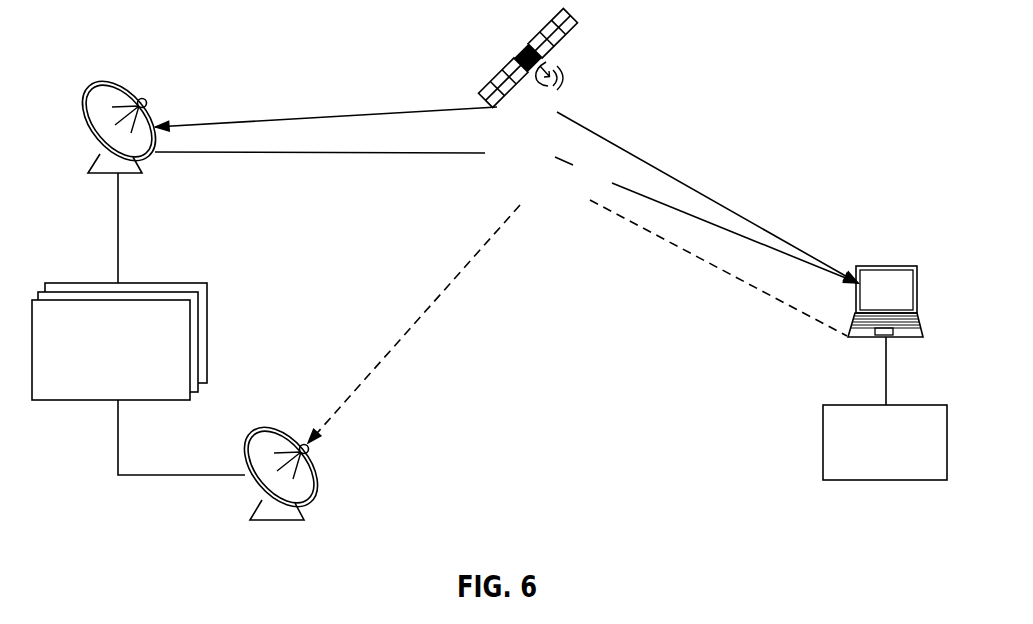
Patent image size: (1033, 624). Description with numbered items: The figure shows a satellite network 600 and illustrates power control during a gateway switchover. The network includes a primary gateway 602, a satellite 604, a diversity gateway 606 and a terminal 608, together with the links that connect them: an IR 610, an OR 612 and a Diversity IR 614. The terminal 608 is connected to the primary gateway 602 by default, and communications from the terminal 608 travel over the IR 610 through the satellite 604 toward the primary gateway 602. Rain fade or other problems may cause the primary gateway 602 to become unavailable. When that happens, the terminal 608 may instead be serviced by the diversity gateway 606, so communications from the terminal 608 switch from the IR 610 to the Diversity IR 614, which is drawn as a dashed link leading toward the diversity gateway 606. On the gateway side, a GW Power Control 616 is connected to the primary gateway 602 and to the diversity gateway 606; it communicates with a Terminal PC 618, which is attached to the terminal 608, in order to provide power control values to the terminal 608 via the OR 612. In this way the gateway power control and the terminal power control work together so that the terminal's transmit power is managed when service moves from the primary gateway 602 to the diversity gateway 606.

The satellite network 600 is at (781, 92).
The primary gateway 602 is at (175, 217).
The satellite 604 is at (523, 50).
The diversity gateway 606 is at (347, 565).
The terminal 608 is at (903, 305).
The IR 610 is at (556, 123).
The OR 612 is at (364, 155).
The Diversity IR 614 is at (610, 198).
The GW Power Control 616 is at (163, 380).
The Terminal PC 618 is at (902, 471).